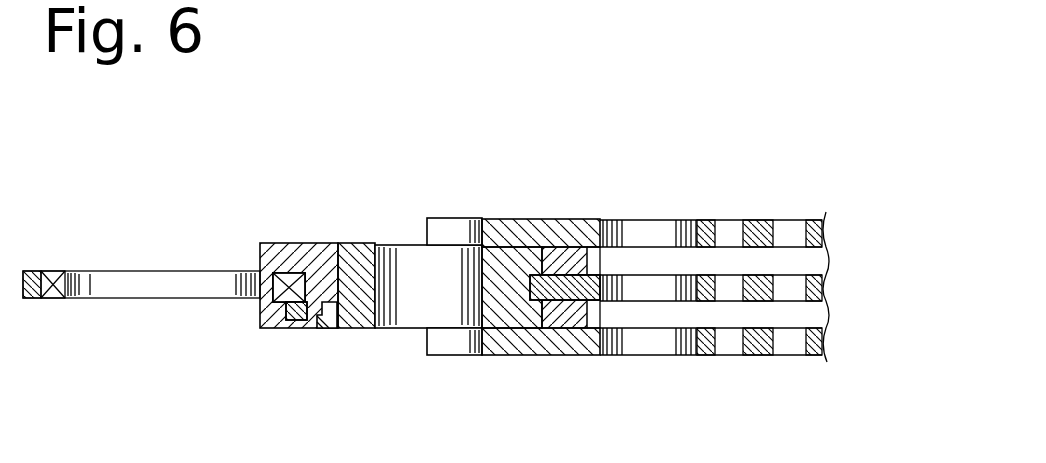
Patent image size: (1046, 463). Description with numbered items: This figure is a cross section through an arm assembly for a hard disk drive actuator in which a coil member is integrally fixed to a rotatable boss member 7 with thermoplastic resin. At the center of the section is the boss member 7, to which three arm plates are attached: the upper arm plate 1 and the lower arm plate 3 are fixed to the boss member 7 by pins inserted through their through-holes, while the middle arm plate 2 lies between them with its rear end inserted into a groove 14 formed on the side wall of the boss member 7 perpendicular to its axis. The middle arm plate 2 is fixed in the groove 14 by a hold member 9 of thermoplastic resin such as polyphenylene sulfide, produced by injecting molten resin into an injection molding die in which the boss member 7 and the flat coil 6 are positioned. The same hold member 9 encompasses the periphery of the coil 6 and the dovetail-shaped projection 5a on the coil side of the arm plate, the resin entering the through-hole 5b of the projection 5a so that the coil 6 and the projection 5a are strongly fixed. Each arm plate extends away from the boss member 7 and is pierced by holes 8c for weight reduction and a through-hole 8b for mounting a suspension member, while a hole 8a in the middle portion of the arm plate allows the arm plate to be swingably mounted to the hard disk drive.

The upper arm plate 1 is at (547, 219).
The middle arm plate 2 is at (611, 222).
The lower arm plate 3 is at (525, 340).
The dovetail-shaped projection 5a is at (296, 312).
The through-hole 5b is at (318, 318).
The coil 6 is at (50, 280).
The boss member 7 is at (360, 250).
The hole 8a is at (412, 318).
The through-hole 8b is at (797, 221).
The holes 8c is at (733, 221).
The hold member 9 is at (31, 290).
The groove 14 is at (543, 295).